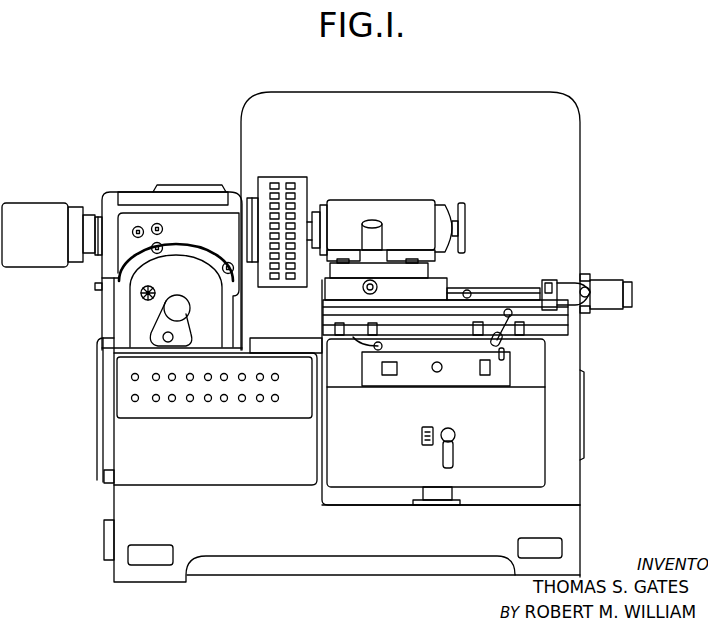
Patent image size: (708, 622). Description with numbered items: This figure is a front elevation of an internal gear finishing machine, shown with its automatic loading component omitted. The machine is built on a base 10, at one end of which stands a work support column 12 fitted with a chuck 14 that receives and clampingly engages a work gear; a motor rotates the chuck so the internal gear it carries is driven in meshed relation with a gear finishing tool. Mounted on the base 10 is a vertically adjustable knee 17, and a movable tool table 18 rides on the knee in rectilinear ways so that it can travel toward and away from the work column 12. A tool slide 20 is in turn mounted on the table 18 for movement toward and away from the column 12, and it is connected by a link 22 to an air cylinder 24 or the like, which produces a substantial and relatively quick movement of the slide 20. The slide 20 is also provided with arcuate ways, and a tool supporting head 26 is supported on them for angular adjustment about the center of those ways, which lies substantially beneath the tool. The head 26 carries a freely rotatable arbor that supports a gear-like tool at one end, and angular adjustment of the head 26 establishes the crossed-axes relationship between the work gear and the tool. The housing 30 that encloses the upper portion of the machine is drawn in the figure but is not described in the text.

The base 10 is at (582, 528).
The work support column 12 is at (110, 192).
The chuck 14 is at (273, 176).
The vertically adjustable knee 17 is at (547, 365).
The tool table 18 is at (522, 313).
The tool slide 20 is at (447, 288).
The link 22 is at (495, 288).
The air cylinder 24 is at (607, 292).
The tool supporting head 26 is at (403, 215).
The housing 30 is at (507, 92).